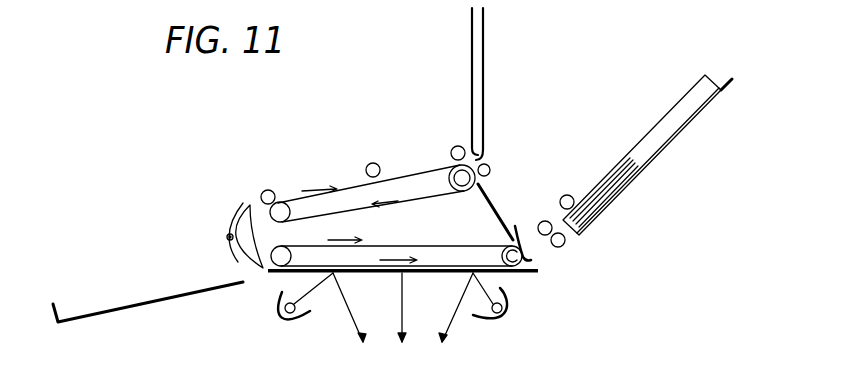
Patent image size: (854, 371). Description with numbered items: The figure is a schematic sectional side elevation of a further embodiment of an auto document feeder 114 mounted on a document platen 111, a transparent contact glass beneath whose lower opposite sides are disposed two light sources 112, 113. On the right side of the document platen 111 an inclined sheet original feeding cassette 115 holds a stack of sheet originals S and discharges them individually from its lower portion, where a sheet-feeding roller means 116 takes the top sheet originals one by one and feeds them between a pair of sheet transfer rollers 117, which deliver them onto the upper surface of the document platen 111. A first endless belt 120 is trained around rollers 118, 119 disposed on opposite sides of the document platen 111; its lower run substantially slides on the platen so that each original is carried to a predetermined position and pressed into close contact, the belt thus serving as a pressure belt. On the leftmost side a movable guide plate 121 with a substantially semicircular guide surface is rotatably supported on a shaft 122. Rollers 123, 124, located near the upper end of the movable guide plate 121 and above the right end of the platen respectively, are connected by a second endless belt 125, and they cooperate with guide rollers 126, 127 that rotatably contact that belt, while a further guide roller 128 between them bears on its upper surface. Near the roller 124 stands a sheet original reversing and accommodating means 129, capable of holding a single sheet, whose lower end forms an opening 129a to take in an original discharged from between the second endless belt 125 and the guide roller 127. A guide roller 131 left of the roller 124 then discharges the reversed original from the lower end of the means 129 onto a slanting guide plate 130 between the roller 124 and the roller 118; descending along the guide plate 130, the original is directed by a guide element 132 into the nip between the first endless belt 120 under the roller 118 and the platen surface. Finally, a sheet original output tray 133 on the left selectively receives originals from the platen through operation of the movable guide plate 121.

The document platen 111 is at (432, 273).
The light source 112 is at (275, 321).
The light source 113 is at (507, 322).
The auto document feeder 114 is at (505, 198).
The sheet original feeding cassette 115 is at (641, 173).
The sheet-feeding roller means 116 is at (567, 196).
The sheet transfer rollers 117 is at (561, 246).
The roller 118 is at (520, 266).
The roller 119 is at (276, 232).
The first endless belt 120 is at (377, 247).
The movable guide plate 121 is at (238, 267).
The shaft 122 is at (227, 236).
The roller 123 is at (262, 203).
The roller 124 is at (449, 183).
The second endless belt 125 is at (414, 173).
The guide roller 126 is at (279, 179).
The guide roller 127 is at (455, 146).
The guide roller 128 is at (368, 164).
The sheet original reversing and accommodating means 129 is at (485, 48).
The opening 129a is at (470, 146).
The guide plate 130 is at (487, 199).
The guide roller 131 is at (487, 165).
The guide element 132 is at (522, 228).
The sheet original output tray 133 is at (150, 304).
The sheet stack S is at (612, 169).